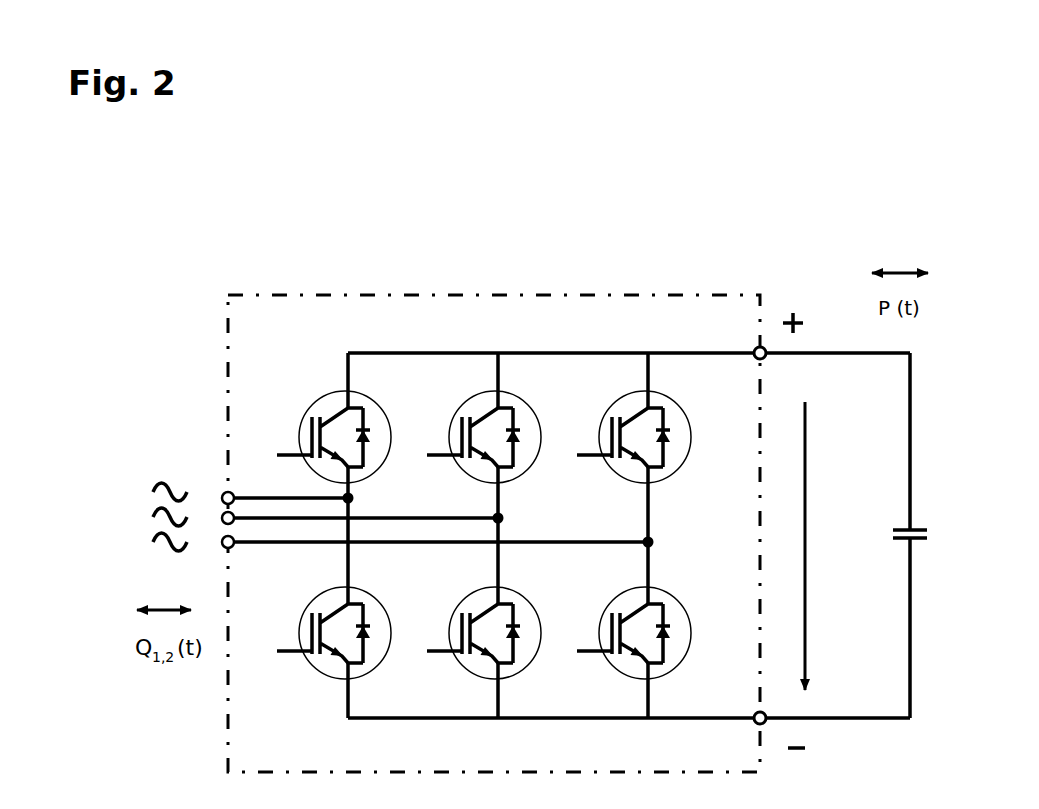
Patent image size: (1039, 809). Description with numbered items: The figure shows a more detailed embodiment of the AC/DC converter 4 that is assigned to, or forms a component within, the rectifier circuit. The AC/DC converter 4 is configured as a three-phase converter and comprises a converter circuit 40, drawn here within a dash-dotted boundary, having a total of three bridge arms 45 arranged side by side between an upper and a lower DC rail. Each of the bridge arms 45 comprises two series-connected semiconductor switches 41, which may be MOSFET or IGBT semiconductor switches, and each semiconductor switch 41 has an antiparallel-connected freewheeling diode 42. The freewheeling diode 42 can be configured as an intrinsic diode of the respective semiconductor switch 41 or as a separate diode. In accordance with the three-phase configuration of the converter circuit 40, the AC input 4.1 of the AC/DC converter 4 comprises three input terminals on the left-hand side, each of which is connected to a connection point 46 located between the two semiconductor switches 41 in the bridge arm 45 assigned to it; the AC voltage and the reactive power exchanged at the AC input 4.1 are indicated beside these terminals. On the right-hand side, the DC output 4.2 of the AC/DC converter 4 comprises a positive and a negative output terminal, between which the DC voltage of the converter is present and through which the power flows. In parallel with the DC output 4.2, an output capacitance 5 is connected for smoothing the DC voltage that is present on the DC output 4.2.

The AC/DC converter 4 is at (617, 295).
The converter circuit 40 is at (494, 533).
The AC input 4.1 is at (210, 480).
The DC output 4.2 is at (770, 420).
The semiconductor switch 41 is at (295, 417).
The freewheeling diode 42 is at (370, 422).
The bridge arm 45 is at (625, 325).
The connection point 46 is at (356, 498).
The output capacitance 5 is at (932, 513).